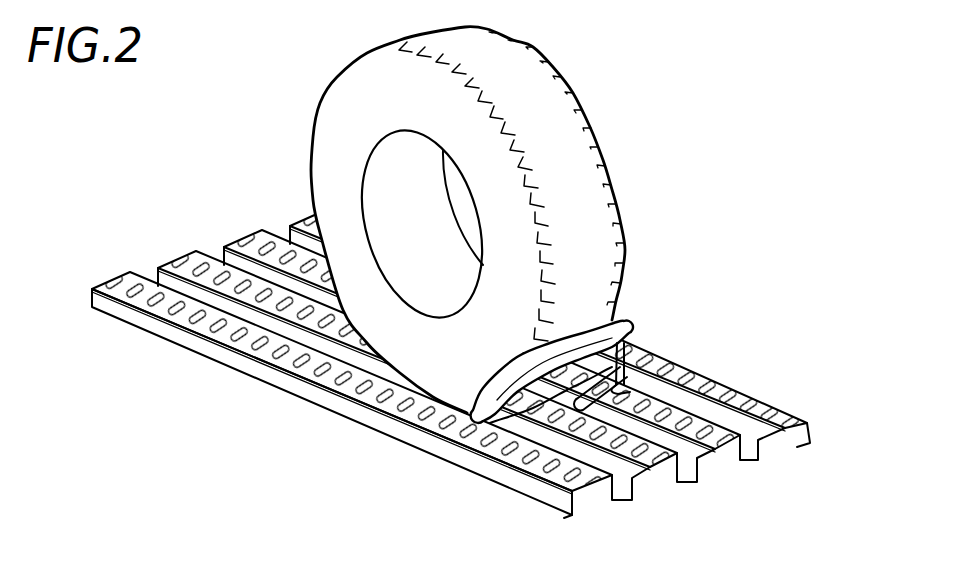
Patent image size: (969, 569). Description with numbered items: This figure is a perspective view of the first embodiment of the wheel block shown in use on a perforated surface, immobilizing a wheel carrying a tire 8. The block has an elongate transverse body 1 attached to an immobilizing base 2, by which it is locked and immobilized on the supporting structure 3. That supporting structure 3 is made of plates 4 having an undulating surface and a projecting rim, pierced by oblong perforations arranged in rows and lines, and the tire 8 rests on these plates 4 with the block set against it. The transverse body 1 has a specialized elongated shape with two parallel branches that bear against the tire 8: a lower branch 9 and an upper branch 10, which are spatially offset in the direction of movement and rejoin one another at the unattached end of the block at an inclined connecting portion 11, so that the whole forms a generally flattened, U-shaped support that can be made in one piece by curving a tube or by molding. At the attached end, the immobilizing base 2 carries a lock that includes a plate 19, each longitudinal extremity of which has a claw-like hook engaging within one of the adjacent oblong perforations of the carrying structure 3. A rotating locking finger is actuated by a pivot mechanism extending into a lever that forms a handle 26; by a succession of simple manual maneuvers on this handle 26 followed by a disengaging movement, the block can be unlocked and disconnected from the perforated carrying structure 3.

The elongate transverse body 1 is at (588, 397).
The immobilizing base 2 is at (550, 328).
The supporting structure 3 is at (451, 337).
The plate 4 is at (168, 330).
The tire 8 is at (612, 160).
The lower branch 9 is at (526, 404).
The upper branch 10 is at (530, 372).
The inclined connecting portion 11 is at (487, 407).
The plate 19 is at (688, 372).
The handle 26 is at (710, 473).